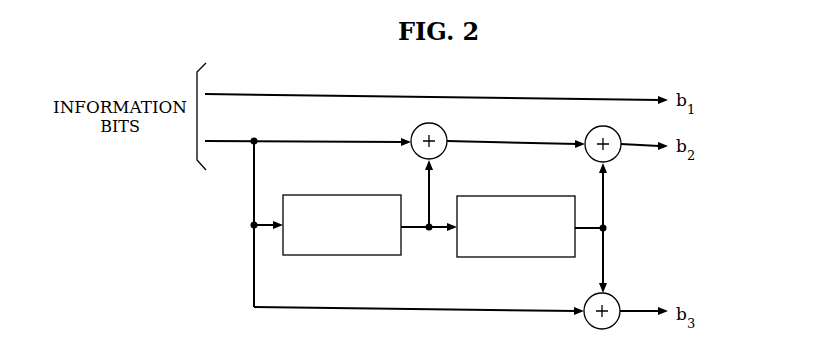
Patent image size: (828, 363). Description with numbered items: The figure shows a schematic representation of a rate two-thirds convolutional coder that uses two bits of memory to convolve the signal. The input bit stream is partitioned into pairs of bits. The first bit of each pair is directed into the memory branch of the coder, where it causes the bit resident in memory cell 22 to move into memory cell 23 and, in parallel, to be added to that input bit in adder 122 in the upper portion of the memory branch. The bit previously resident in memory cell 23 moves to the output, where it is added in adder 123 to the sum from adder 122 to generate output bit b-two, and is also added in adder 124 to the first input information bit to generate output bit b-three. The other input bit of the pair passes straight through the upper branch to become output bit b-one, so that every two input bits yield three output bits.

The memory cell 22 is at (318, 195).
The memory cell 23 is at (497, 196).
The adder 122 is at (416, 130).
The adder 123 is at (613, 159).
The adder 124 is at (616, 297).